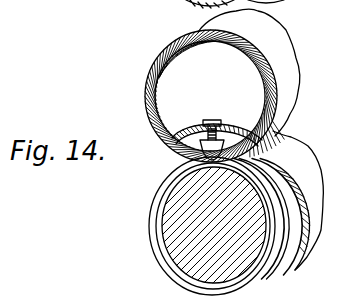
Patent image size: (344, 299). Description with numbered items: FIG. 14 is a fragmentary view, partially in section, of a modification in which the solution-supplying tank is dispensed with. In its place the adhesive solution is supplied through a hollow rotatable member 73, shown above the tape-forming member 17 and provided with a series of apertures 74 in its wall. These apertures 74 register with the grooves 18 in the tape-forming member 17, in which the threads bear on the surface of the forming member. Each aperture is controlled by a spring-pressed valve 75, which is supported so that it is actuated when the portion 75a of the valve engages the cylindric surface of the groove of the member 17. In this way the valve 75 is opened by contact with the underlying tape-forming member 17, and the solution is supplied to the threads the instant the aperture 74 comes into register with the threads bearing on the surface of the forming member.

The rotatable member 73 is at (182, 38).
The apertures 74 is at (227, 140).
The spring-pressed valve 75 is at (203, 157).
The portion of the valve 75a is at (163, 173).
The tape-forming member 17 is at (168, 230).
The grooves 18 is at (266, 266).